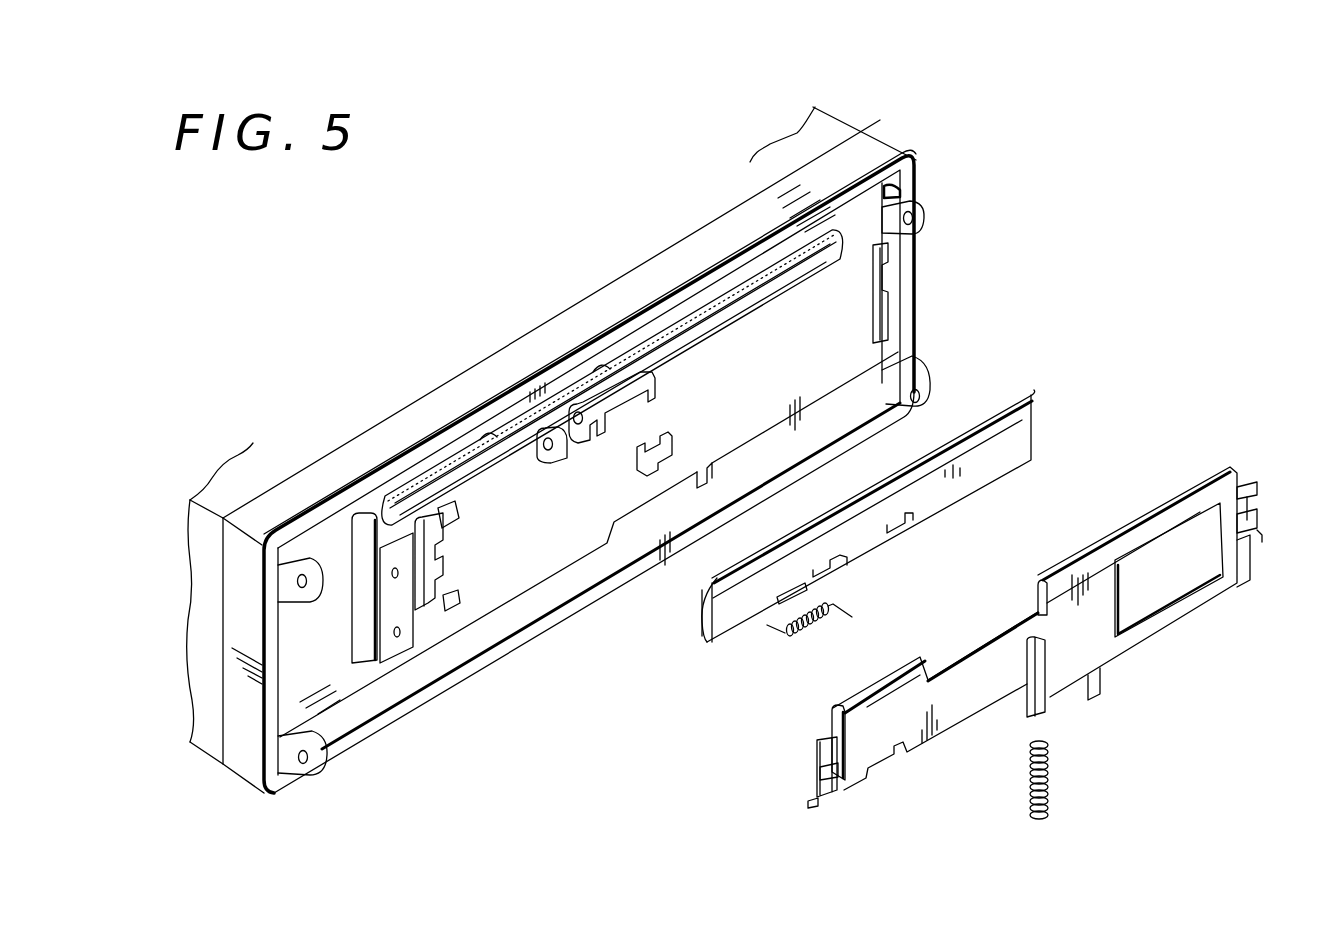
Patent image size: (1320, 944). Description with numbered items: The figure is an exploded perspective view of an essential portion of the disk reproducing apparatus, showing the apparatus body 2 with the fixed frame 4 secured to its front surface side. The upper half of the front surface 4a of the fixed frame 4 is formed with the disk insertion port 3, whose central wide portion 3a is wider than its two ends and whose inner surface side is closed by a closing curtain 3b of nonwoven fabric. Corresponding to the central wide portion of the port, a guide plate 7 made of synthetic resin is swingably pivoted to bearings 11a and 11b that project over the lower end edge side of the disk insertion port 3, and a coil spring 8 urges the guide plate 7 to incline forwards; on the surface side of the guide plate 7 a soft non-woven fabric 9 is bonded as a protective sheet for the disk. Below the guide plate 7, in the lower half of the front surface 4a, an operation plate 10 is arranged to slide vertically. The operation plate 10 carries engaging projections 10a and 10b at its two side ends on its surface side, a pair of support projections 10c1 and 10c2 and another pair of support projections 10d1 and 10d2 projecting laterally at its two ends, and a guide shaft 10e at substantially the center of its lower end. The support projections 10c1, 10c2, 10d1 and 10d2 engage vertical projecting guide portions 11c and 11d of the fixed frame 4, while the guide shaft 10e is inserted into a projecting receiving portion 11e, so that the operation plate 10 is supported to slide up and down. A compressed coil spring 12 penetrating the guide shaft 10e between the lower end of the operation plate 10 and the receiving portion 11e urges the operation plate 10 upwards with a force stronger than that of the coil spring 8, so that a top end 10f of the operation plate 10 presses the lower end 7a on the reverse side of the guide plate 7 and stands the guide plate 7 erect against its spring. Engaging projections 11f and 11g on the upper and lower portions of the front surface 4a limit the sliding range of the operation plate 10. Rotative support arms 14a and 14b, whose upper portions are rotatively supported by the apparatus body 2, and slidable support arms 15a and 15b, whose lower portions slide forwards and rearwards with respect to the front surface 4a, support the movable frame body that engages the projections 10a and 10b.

The apparatus body 2 is at (850, 120).
The fixed frame 4 is at (880, 160).
The front surface 4a is at (540, 560).
The disk insertion port 3 is at (478, 440).
The central wide portion 3a is at (604, 365).
The closing curtain 3b is at (700, 320).
The guide plate 7 is at (1017, 440).
The lower end 7a is at (760, 605).
The coil spring 8 is at (825, 630).
The non-woven fabric 9 is at (700, 622).
The operation plate 10 is at (967, 703).
The engaging projection 10a is at (842, 782).
The engaging projection 10b is at (1245, 587).
The support projection 10c1 is at (813, 765).
The support projection 10c2 is at (808, 806).
The support projection 10d1 is at (1250, 482).
The support projection 10d2 is at (1260, 542).
The guide shaft 10e is at (1045, 697).
The top end 10f is at (1038, 596).
The bearing 11a is at (545, 462).
The bearing 11b is at (655, 385).
The guide portion 11c is at (437, 550).
The guide portion 11d is at (873, 283).
The receiving portion 11e is at (635, 470).
The engaging projection 11f is at (440, 530).
The engaging projection 11g is at (455, 612).
The compressed coil spring 12 is at (1050, 780).
The rotative support arm 14a is at (290, 553).
The rotative support arm 14b is at (928, 204).
The slidable support arm 15a is at (295, 775).
The slidable support arm 15b is at (925, 362).